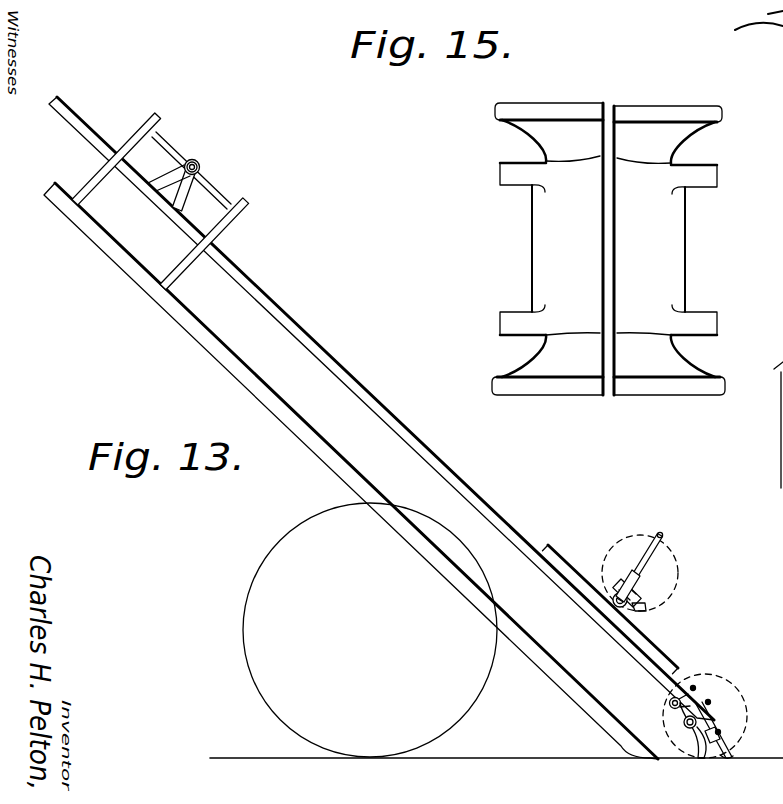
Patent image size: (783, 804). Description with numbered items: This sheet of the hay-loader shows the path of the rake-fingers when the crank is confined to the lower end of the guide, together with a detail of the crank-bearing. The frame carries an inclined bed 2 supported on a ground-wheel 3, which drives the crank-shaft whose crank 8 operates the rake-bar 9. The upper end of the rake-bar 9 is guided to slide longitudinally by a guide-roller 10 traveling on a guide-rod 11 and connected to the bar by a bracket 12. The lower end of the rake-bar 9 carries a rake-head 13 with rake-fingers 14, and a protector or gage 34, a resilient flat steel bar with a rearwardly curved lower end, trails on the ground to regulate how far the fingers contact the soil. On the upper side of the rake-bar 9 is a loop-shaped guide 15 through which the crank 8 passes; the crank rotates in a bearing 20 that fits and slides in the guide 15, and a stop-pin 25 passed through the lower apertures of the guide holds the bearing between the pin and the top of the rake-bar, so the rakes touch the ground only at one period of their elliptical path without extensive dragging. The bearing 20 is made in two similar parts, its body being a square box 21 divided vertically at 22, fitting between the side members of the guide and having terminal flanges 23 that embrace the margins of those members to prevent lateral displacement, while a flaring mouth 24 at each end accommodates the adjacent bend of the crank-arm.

In FIG. 13, the inclined bed 2 is at (230, 363).
In FIG. 13, the rake-bar 9 is at (378, 400).
In FIG. 13, the ground-wheel 3 is at (251, 585).
In FIG. 13, the guide-rod 11 is at (165, 146).
In FIG. 13, the guide-roller 10 is at (196, 164).
In FIG. 13, the bracket 12 is at (199, 177).
In FIG. 13, the crank 8 is at (663, 537).
In FIG. 13, the guide 15 is at (642, 595).
In FIG. 13, the stop-pin 25 is at (641, 604).
In FIG. 13, the bearing 20 is at (610, 590).
In FIG. 15, the bearing 20 is at (688, 231).
In FIG. 13, the rake-head 13 is at (675, 705).
In FIG. 13, the rake-finger 14 is at (686, 758).
In FIG. 13, the protector or gage 34 is at (718, 750).
In FIG. 15, the flaring mouth 24 is at (631, 112).
In FIG. 15, the terminal flange 23 is at (500, 173).
In FIG. 15, the vertical division 22 is at (602, 208).
In FIG. 15, the square box 21 is at (536, 251).